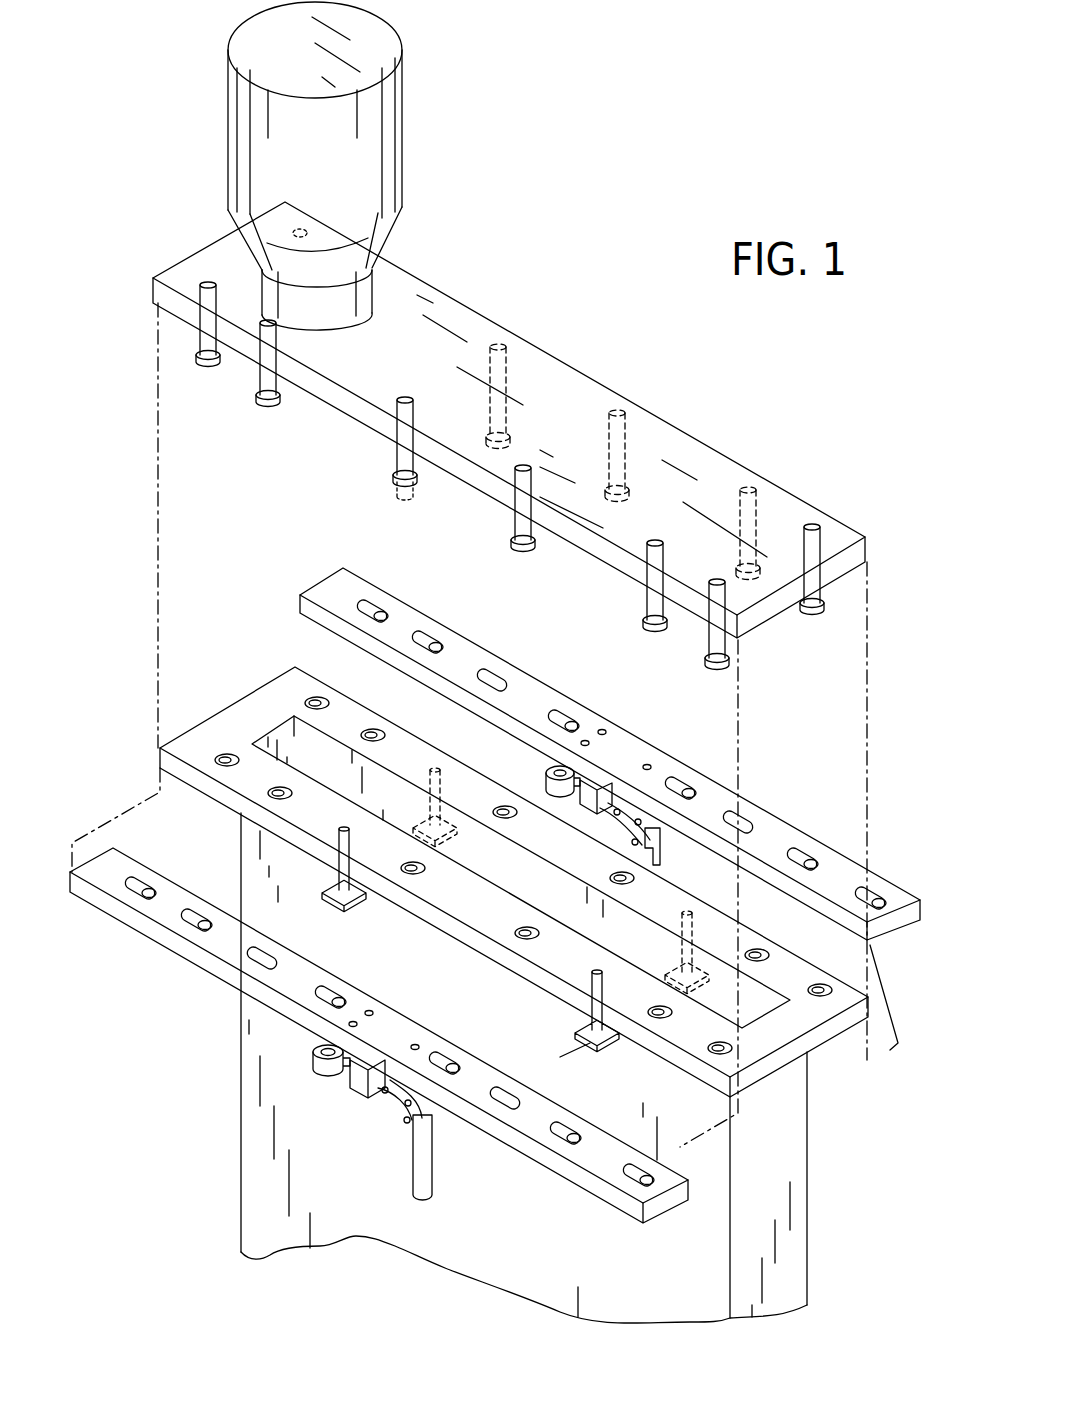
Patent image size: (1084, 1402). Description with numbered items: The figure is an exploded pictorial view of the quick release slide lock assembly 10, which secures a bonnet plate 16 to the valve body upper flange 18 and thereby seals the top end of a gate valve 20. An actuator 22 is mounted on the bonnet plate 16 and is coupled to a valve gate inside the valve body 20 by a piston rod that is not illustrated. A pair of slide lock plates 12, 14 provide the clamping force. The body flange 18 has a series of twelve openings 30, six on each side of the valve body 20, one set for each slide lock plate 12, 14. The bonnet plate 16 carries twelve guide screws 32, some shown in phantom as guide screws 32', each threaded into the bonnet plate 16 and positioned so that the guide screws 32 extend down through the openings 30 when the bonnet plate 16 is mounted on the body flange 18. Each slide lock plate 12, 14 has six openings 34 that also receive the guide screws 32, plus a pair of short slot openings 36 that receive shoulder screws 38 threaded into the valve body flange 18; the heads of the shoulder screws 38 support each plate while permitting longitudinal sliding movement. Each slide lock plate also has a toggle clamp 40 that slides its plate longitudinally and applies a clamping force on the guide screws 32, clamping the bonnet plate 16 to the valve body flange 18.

The quick release slide lock assembly 10 is at (872, 441).
The slide lock plate 12 is at (552, 700).
The slide lock plate 14 is at (282, 985).
The bonnet plate 16 is at (566, 372).
The valve body upper flange 18 is at (783, 1033).
The gate valve 20 is at (768, 1202).
The actuator 22 is at (372, 168).
The openings 30 is at (372, 733).
The guide screws 32 is at (497, 476).
The alternate pins 32' is at (469, 420).
The slide lock plate openings 34 is at (427, 638).
The short slot openings 36 is at (493, 676).
The shoulder screws 38 is at (428, 808).
The toggle clamp 40 is at (672, 852).